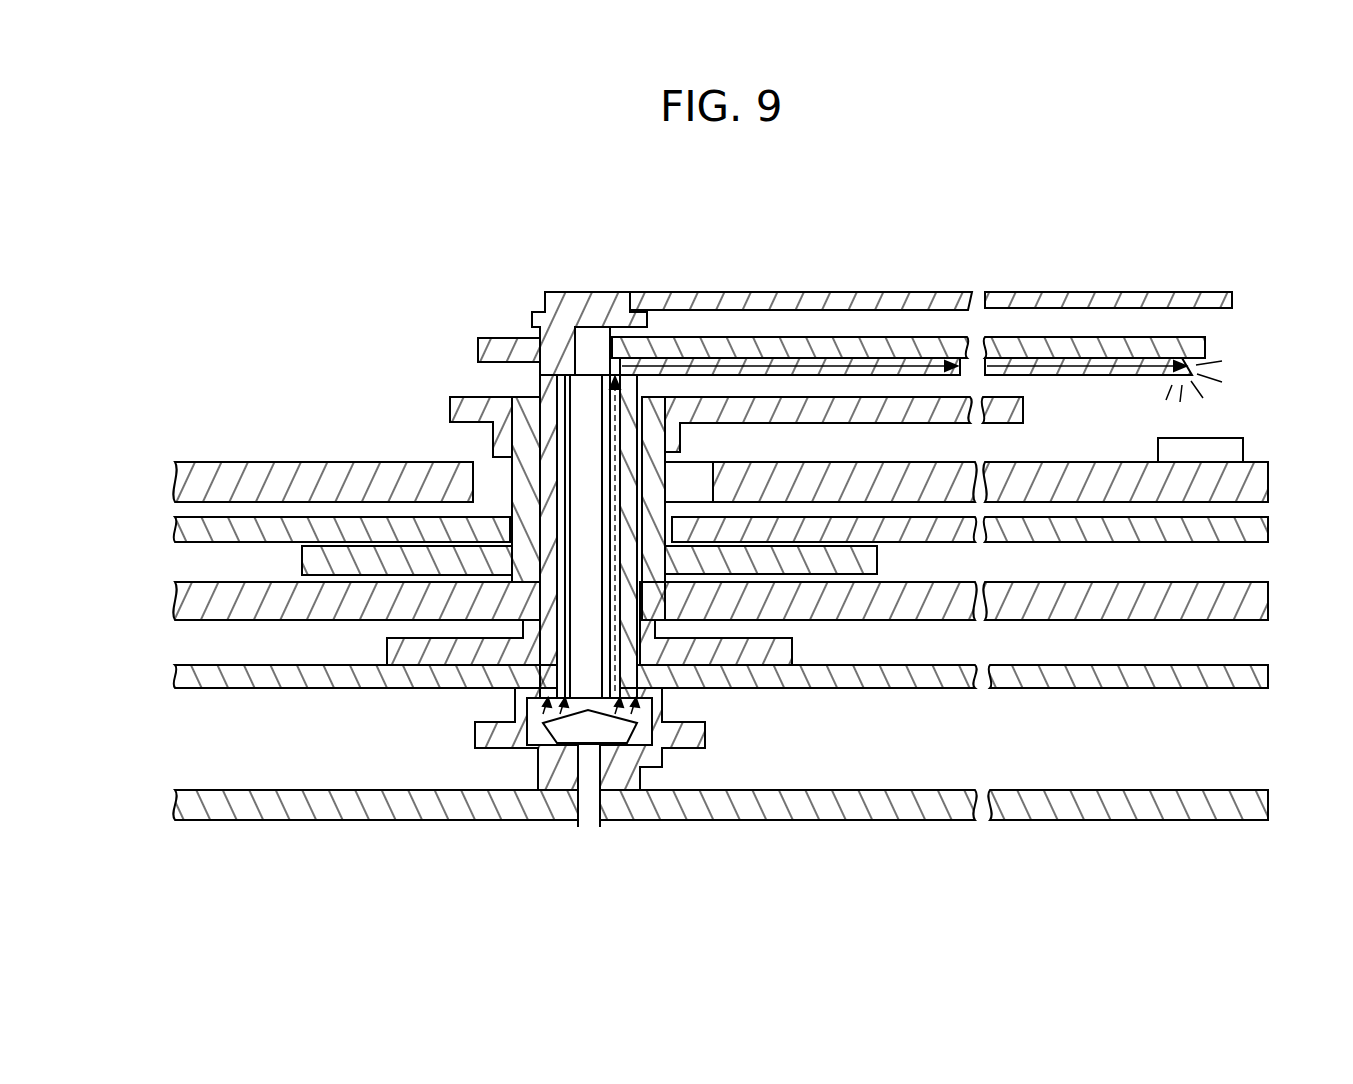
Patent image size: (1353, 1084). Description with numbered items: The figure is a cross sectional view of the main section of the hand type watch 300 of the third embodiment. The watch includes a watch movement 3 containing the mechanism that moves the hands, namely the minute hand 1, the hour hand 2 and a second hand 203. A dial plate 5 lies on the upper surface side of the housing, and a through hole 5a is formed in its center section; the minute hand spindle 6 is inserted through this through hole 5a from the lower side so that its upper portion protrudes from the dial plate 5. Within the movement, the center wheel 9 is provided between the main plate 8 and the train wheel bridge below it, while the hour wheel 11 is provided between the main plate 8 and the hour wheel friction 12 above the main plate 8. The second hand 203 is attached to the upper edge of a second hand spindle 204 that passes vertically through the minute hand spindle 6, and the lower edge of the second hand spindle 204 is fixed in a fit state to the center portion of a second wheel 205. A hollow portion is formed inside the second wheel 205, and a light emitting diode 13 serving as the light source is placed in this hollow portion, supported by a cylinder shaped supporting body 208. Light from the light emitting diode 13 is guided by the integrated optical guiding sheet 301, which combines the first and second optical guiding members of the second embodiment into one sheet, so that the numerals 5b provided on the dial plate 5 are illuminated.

The minute hand 1 is at (1038, 345).
The hour hand 2 is at (1010, 411).
The watch movement 3 is at (351, 650).
The dial plate 5 is at (267, 462).
The through hole 5a is at (460, 455).
The numerals 5b is at (1232, 448).
The minute hand spindle 6 is at (548, 388).
The main plate 8 is at (1268, 595).
The center wheel 9 is at (456, 655).
The hour wheel 11 is at (875, 556).
The hour wheel friction 12 is at (228, 527).
The light emitting diode 13 is at (567, 733).
The second hand 203 is at (732, 292).
The second hand spindle 204 is at (592, 333).
The second wheel 205 is at (700, 738).
The supporting body 208 is at (590, 822).
The hand type watch 300 is at (663, 268).
The integrated optical guiding sheet 301 is at (1103, 362).